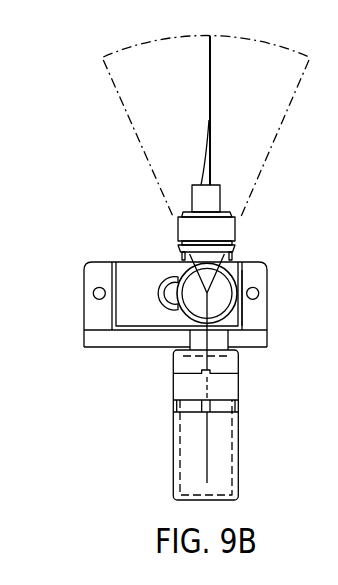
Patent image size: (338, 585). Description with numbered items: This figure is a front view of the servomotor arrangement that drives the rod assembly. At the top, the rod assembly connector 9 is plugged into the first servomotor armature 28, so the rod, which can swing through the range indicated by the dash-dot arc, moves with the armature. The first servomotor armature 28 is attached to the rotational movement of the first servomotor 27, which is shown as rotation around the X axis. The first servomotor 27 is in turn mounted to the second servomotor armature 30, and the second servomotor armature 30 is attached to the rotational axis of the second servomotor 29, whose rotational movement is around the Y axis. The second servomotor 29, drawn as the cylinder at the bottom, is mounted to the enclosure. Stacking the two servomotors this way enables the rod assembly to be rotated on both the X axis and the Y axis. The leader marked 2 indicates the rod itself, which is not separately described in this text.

The control rod 2 is at (210, 93).
The rod assembly connector 9 is at (205, 198).
The servomotor 1 27 is at (142, 293).
The servomotor 1 armature 28 is at (213, 230).
The servomotor 2 29 is at (200, 445).
The servomotor 2 armature 30 is at (255, 270).